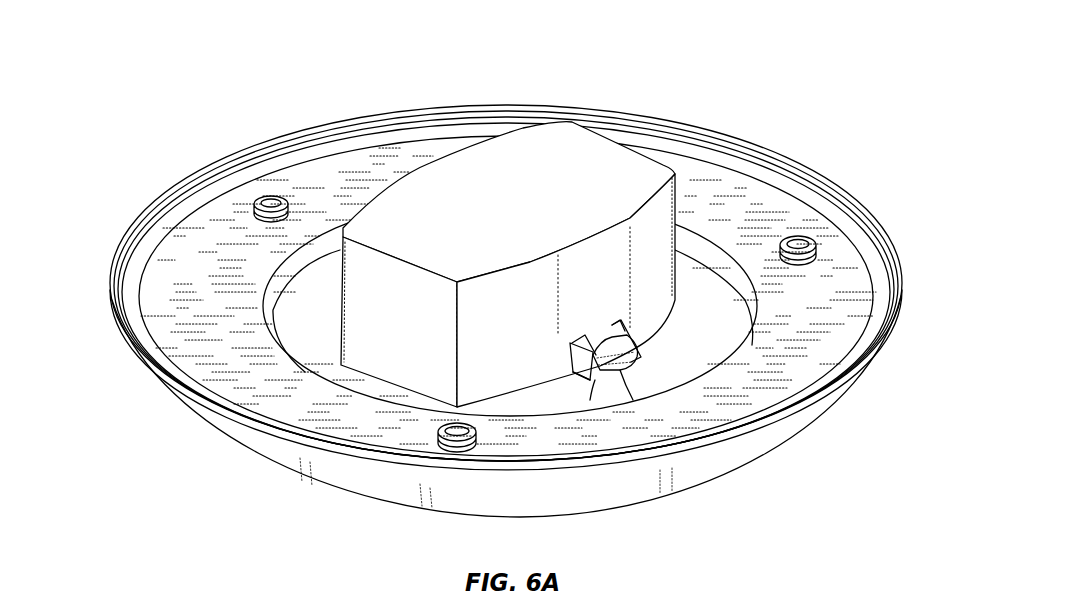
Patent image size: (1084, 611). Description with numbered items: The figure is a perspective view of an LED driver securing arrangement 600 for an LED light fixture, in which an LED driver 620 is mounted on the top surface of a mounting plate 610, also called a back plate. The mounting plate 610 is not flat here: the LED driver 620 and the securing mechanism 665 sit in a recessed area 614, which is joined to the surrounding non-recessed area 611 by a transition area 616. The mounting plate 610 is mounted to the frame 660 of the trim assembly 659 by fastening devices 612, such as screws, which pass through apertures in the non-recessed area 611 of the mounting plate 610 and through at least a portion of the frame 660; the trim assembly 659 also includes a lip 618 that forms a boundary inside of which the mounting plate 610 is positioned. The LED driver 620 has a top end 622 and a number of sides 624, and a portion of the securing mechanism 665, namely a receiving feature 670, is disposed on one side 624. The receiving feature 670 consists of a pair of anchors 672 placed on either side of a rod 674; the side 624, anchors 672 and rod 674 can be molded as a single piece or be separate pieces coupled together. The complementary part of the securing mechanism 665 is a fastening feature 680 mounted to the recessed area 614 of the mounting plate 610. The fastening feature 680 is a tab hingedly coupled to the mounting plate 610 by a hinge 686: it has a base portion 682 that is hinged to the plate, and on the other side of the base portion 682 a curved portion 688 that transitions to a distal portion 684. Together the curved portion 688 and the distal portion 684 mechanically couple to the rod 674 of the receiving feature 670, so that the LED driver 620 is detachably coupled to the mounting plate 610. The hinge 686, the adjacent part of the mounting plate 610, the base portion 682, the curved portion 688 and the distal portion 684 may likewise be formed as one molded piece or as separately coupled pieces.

The motor assembly 600 is at (196, 98).
The mounting plate 610 is at (730, 190).
The non-recessed area 611 is at (837, 301).
The fastening devices 612 is at (268, 196).
The recessed area 614 is at (330, 338).
The transition area 616 is at (312, 245).
The lip 618 is at (153, 252).
The LED driver 620 is at (519, 248).
The top end 622 is at (530, 213).
The side 624 is at (418, 333).
The trim assembly 659 is at (290, 490).
The frame 660 is at (700, 474).
The securing mechanism 665 is at (560, 366).
The receiving feature 670 is at (587, 308).
The anchors 672 is at (575, 343).
The rod 674 is at (570, 356).
The fastening feature 680 is at (604, 351).
The base portion 682 is at (627, 348).
The distal portion 684 is at (606, 325).
The hinge 686 is at (590, 400).
The curved portion 688 is at (633, 400).